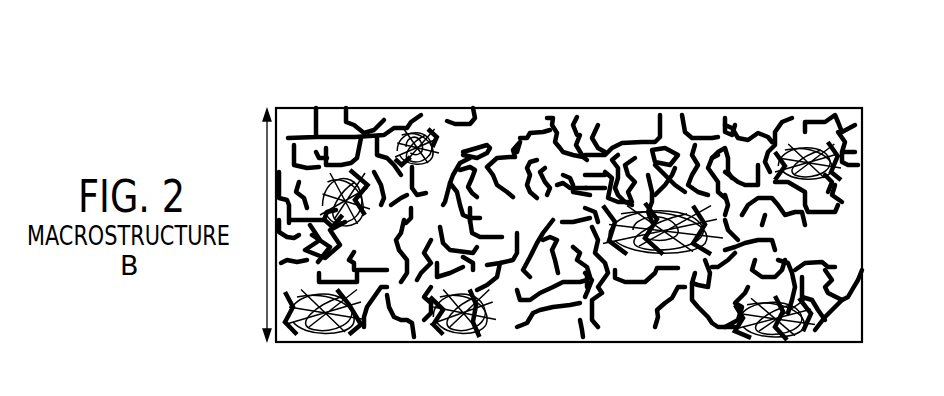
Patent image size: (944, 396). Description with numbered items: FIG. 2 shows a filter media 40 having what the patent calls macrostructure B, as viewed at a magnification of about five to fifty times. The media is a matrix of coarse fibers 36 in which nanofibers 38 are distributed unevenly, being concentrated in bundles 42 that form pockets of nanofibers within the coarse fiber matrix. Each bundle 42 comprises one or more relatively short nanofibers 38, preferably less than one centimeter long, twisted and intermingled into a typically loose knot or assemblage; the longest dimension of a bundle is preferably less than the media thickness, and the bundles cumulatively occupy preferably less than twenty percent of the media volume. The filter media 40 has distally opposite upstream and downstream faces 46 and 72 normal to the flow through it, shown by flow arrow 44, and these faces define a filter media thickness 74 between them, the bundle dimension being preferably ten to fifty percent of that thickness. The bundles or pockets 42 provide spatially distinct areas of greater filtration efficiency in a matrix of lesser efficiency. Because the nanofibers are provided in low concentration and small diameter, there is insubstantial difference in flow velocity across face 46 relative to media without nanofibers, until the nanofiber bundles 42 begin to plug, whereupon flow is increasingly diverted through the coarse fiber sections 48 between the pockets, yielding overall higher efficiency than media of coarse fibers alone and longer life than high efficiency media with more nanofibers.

The coarse fibers 36 is at (486, 140).
The nanofibers 38 is at (360, 140).
The filter media 40 is at (326, 106).
The bundles 42 is at (422, 140).
The flow arrow 44 is at (528, 107).
The upstream face 46 is at (760, 108).
The coarse fiber sections 48 is at (580, 133).
The downstream face 72 is at (727, 343).
The filter media thickness 74 is at (265, 146).